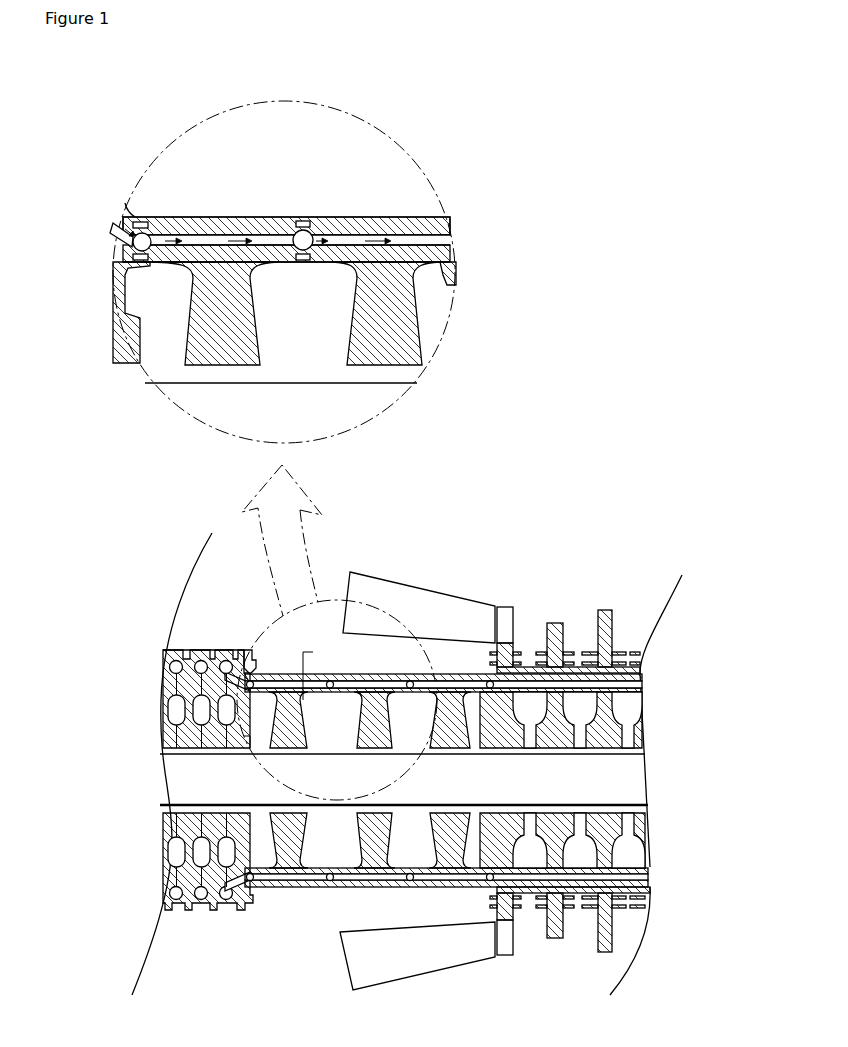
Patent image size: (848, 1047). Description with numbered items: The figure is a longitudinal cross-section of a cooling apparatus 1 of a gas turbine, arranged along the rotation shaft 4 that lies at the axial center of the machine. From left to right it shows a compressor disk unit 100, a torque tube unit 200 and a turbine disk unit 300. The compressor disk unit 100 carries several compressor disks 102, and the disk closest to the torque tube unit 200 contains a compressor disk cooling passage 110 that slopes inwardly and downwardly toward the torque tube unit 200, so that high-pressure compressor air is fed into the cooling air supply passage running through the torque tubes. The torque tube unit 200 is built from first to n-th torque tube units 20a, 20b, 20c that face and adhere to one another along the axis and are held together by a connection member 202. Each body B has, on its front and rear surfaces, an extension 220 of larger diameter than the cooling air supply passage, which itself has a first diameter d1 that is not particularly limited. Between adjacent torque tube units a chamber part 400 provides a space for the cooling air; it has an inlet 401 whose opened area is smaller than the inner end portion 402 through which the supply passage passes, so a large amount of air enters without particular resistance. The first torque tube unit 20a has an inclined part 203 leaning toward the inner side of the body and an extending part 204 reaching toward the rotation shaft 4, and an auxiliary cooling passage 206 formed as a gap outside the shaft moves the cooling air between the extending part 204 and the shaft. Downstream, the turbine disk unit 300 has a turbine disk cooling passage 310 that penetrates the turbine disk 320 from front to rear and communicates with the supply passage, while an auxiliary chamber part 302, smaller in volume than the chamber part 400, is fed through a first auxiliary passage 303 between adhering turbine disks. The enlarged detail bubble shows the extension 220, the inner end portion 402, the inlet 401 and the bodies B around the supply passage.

The cooling apparatus 1 is at (407, 742).
The rotation shaft 4 is at (618, 784).
The compressor disk unit 100 is at (198, 628).
The compressor disk 102 is at (243, 648).
The compressor disk cooling passage 110 is at (240, 660).
The torque tube unit 200 is at (467, 525).
The first torque tube unit 20a is at (292, 660).
The second torque tube unit 20b is at (366, 664).
The n-th torque tube unit 20c is at (440, 664).
The connection member 202 is at (136, 252).
The inclined part 203 is at (247, 743).
The extending part 204 is at (295, 752).
The auxiliary cooling passage 206 is at (258, 803).
The extension 220 is at (150, 218).
The turbine disk unit 300 is at (620, 604).
The auxiliary chamber part 302 is at (583, 702).
The first auxiliary passage 303 is at (633, 738).
The turbine disk cooling passage 310 is at (528, 709).
The turbine disk 320 is at (513, 668).
The chamber part 400 is at (322, 727).
The inlet 401 is at (298, 380).
The inner end portion 402 is at (306, 263).
The body B is at (338, 646).
The first diameter d1 is at (317, 672).